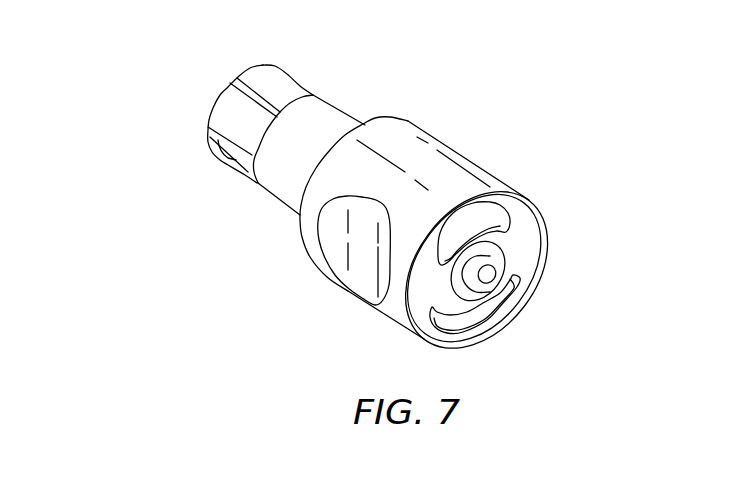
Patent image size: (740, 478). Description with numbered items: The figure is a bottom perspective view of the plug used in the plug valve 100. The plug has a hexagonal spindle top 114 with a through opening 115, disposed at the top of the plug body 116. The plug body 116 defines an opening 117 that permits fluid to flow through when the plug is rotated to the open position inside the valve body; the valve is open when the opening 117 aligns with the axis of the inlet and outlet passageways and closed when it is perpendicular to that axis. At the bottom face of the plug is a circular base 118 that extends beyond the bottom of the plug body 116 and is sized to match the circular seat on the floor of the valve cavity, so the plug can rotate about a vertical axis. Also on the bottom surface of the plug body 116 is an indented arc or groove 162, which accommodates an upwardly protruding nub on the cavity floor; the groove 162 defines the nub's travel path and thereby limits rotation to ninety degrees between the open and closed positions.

The plug valve 100 is at (134, 67).
The hexagonal spindle top 114 is at (263, 64).
The through opening 115 is at (238, 155).
The plug body 116 is at (407, 129).
The opening 117 is at (358, 250).
The circular base 118 is at (500, 245).
The groove 162 is at (436, 322).